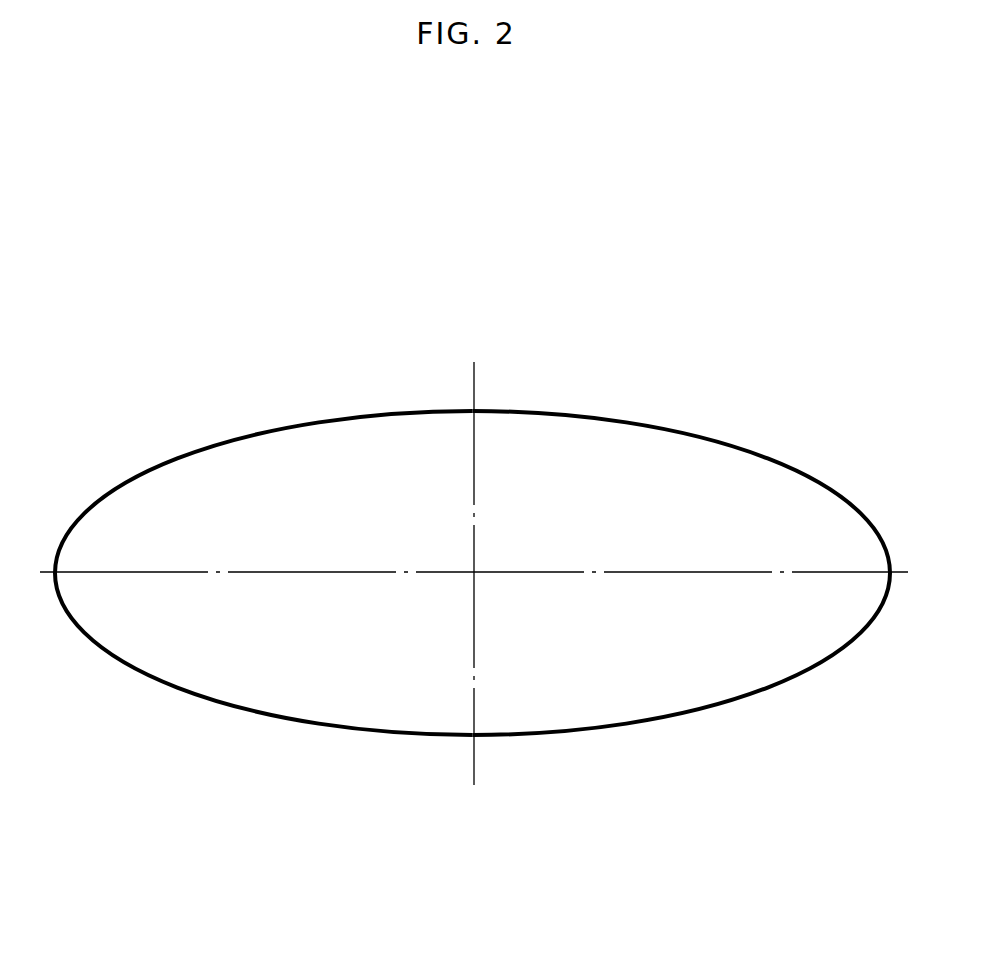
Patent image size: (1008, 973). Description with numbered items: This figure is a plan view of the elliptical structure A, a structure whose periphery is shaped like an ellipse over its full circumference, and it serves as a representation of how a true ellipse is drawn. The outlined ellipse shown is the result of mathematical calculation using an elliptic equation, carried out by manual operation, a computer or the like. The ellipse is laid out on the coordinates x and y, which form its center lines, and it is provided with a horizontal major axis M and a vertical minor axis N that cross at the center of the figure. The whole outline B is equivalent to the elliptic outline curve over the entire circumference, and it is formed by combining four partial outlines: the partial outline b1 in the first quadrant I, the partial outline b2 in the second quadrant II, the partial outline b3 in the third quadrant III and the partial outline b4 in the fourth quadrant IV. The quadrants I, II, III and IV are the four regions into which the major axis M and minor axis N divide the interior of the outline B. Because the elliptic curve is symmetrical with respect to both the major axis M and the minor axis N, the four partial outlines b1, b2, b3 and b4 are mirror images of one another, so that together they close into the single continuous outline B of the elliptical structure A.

The elliptical structure A is at (708, 370).
The outline B is at (766, 451).
The partial outline b1 is at (600, 411).
The partial outline b2 is at (252, 438).
The partial outline b3 is at (266, 714).
The partial outline b4 is at (708, 706).
The minor axis N is at (482, 465).
The major axis M is at (512, 570).
The coordinate x is at (410, 571).
The coordinate y is at (472, 648).
The first quadrant I is at (587, 509).
The second quadrant II is at (329, 510).
The third quadrant III is at (326, 656).
The fourth quadrant IV is at (617, 657).